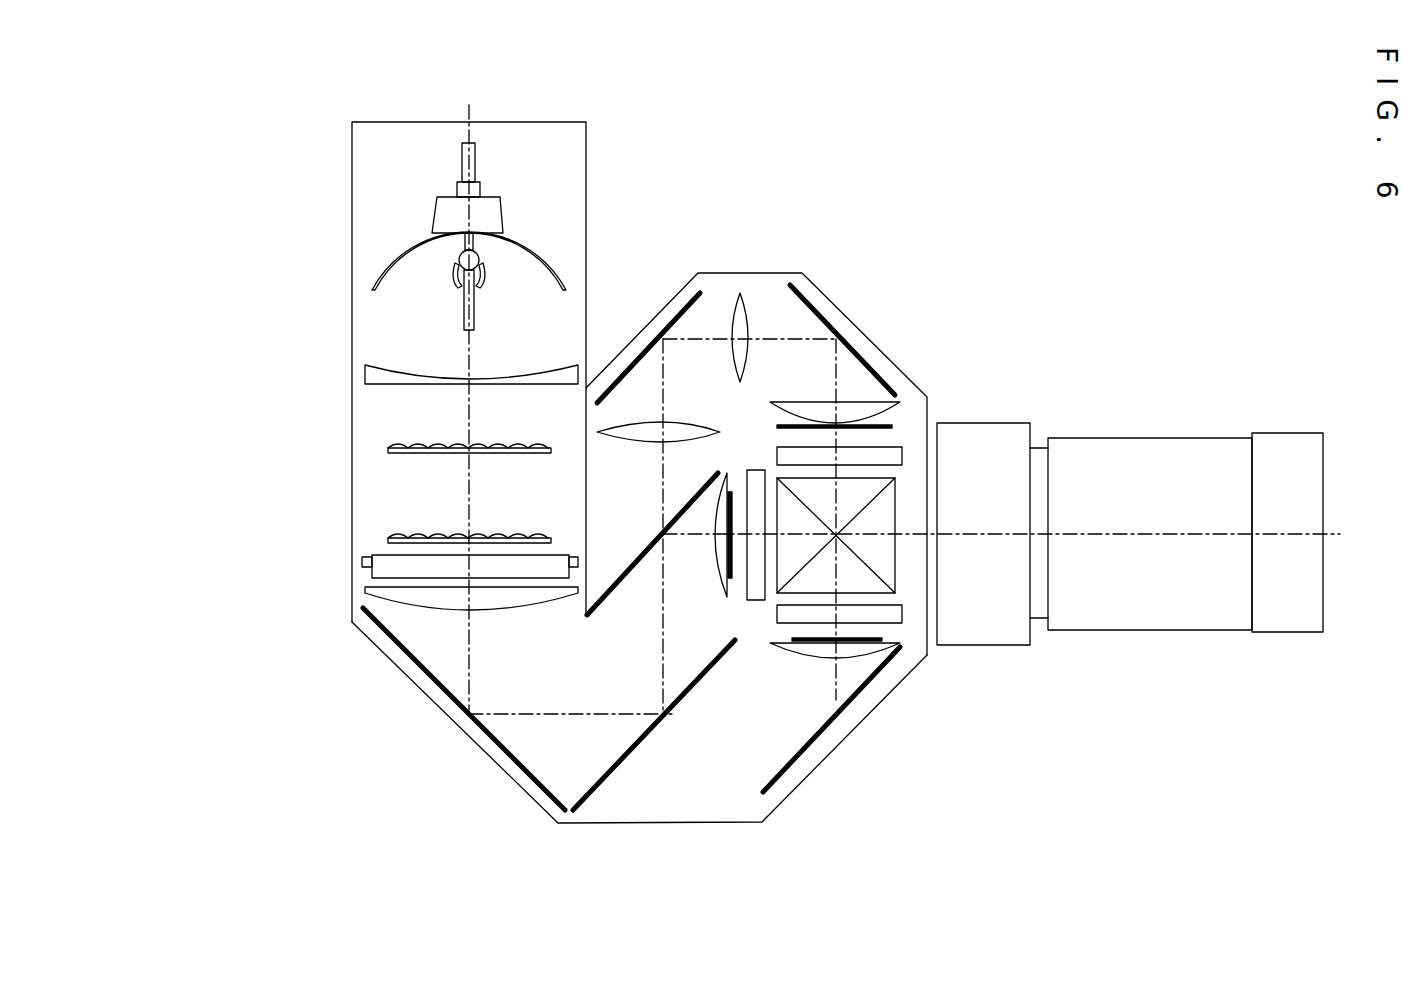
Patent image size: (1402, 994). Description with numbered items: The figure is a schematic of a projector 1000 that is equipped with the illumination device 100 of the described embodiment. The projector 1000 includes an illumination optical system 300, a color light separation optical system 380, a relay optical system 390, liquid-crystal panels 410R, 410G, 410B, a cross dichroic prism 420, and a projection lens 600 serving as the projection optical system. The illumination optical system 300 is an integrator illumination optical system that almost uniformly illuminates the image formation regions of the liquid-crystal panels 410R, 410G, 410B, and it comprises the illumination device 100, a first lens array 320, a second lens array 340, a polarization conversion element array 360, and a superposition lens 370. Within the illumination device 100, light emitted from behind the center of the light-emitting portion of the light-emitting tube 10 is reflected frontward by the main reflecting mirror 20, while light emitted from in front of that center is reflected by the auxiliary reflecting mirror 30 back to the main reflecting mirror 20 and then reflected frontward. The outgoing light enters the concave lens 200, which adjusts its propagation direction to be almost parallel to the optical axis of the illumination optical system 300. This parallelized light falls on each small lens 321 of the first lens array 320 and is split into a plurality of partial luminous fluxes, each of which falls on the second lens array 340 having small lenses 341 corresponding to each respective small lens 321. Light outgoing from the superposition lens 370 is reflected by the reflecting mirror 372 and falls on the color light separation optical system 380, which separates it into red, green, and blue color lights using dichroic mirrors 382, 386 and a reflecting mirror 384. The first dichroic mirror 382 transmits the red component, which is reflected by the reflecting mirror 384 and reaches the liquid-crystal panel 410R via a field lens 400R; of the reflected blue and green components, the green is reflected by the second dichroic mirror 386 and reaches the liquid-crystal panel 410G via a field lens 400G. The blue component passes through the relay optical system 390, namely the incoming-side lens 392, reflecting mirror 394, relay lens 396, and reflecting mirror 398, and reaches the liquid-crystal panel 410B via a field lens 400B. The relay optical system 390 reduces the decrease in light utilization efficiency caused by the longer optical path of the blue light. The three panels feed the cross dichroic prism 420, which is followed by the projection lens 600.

The projector 1000 is at (1212, 142).
The illumination device 100 is at (322, 233).
The light-emitting tube 10 is at (462, 303).
The main reflecting mirror 20 is at (522, 250).
The auxiliary reflecting mirror 30 is at (488, 270).
The concave lens 200 is at (365, 378).
The illumination optical system 300 is at (248, 491).
The first lens array 320 is at (388, 455).
The small lens 321 is at (497, 454).
The second lens array 340 is at (388, 540).
The small lens 341 is at (521, 537).
The polarization conversion element array 360 is at (362, 562).
The superposition lens 370 is at (365, 595).
The reflecting mirror 372 is at (403, 661).
The color light separation optical system 380 is at (622, 678).
The first dichroic mirror 382 is at (668, 727).
The reflecting mirror 384 is at (780, 773).
The second dichroic mirror 386 is at (624, 578).
The relay optical system 390 is at (732, 285).
The incoming-side lens 392 is at (620, 444).
The reflecting mirror 394 is at (637, 364).
The relay lens 396 is at (749, 362).
The reflecting mirror 398 is at (828, 322).
The field lens 400B is at (818, 402).
The field lens 400G is at (715, 560).
The field lens 400R is at (781, 656).
The liquid-crystal panel 410B is at (776, 449).
The liquid-crystal panel 410G is at (752, 468).
The liquid-crystal panel 410R is at (775, 624).
The cross dichroic prism 420 is at (898, 572).
The projection lens 600 is at (1137, 433).